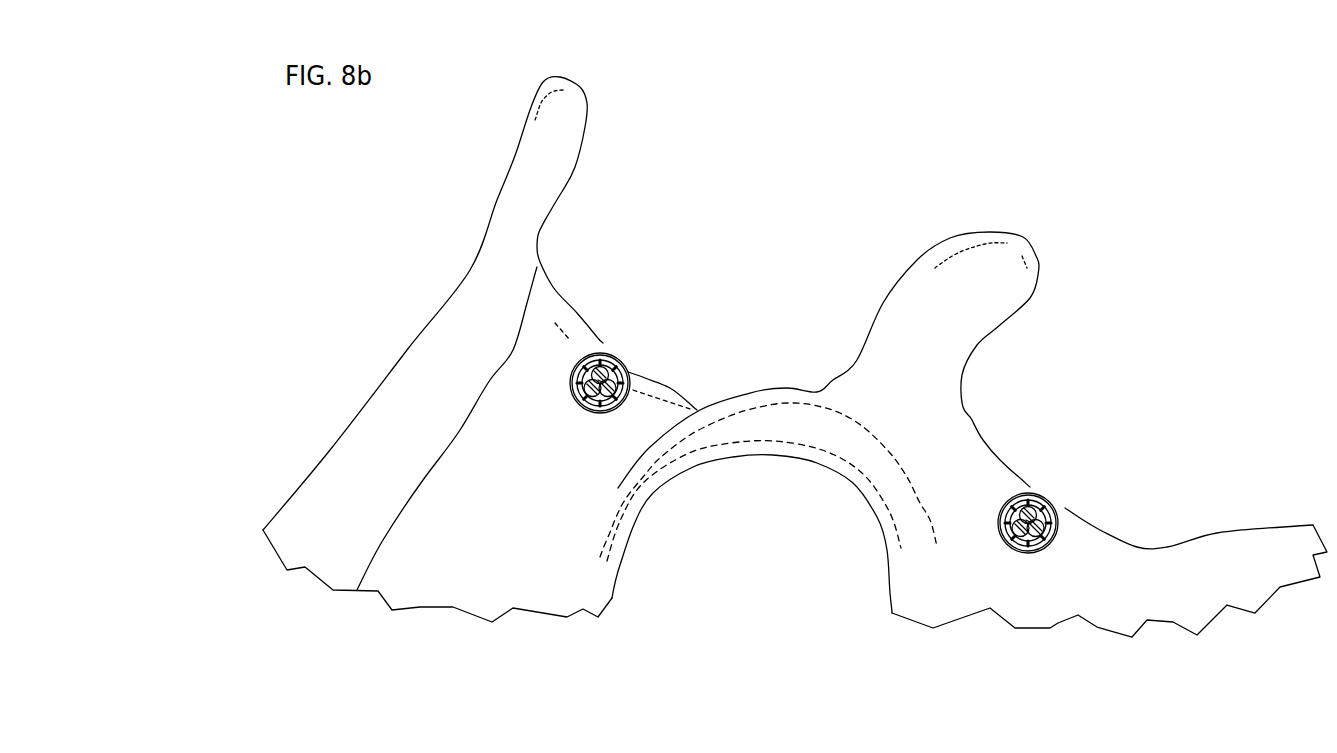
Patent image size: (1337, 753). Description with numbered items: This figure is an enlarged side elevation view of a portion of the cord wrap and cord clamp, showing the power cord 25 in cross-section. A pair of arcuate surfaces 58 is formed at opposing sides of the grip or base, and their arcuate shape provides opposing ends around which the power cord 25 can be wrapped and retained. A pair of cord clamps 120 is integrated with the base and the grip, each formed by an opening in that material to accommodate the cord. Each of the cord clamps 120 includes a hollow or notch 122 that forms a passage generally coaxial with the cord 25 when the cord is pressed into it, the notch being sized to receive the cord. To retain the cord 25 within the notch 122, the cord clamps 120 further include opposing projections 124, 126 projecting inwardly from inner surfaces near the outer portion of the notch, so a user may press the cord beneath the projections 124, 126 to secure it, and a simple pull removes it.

The arcuate surface 58 is at (583, 133).
The power cord 25 is at (1060, 503).
The cord clamp 120 is at (617, 348).
The notch 122 is at (622, 362).
The projection 124 is at (590, 353).
The projection 126 is at (630, 363).